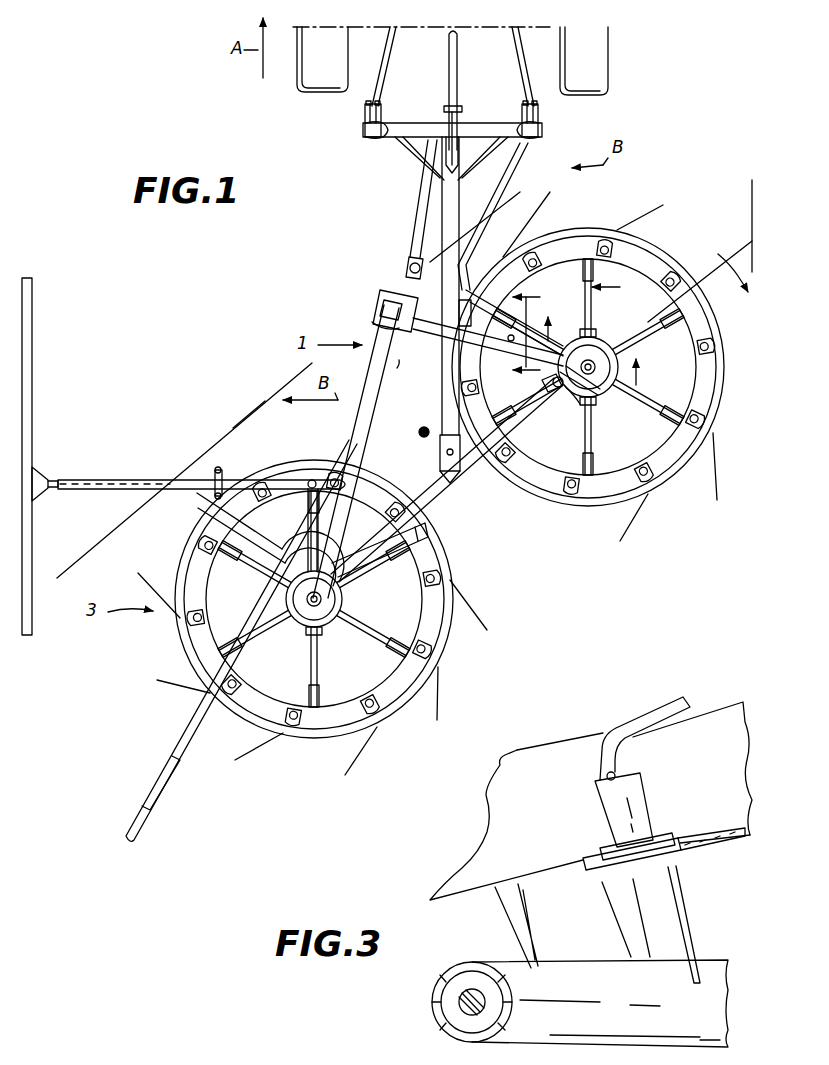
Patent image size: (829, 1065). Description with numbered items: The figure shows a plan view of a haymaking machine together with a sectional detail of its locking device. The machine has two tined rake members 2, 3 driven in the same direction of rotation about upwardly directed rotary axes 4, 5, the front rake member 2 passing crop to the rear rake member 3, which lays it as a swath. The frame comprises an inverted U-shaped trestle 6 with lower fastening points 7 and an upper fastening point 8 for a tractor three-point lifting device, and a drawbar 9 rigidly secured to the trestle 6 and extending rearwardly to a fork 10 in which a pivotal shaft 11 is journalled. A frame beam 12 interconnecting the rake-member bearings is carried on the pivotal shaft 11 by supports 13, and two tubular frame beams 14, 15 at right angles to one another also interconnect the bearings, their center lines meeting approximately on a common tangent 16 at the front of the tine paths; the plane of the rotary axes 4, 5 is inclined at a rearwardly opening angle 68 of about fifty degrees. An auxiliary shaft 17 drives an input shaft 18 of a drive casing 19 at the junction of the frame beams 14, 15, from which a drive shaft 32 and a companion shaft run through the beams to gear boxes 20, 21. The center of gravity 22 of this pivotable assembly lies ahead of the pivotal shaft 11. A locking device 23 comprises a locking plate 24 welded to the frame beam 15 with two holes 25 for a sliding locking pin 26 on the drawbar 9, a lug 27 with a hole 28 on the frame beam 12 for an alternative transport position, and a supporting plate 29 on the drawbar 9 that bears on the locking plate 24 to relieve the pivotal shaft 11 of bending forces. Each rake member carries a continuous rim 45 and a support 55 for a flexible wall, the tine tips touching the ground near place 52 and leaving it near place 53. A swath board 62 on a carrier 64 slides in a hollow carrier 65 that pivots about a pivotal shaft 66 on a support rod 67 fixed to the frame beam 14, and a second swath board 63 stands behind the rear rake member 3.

In FIG. 1, the rake member 2 is at (603, 512).
In FIG. 1, the rake member 3 is at (314, 599).
In FIG. 1, the rotary axis 4 is at (589, 357).
In FIG. 1, the rotary axis 5 is at (305, 616).
In FIG. 1, the trestle 6 is at (410, 122).
In FIG. 1, the fastening points 7 is at (362, 114).
In FIG. 1, the fastening point 8 is at (458, 105).
In FIG. 1, the drawbar 9 is at (450, 212).
In FIG. 3, the drawbar 9 is at (553, 765).
In FIG. 1, the fork 10 is at (439, 440).
In FIG. 1, the pivotal shaft 11 is at (445, 455).
In FIG. 1, the frame beam 12 is at (378, 558).
In FIG. 1, the supports 13 is at (462, 466).
In FIG. 1, the tubular frame beam 14 is at (388, 365).
In FIG. 1, the tubular frame beam 15 is at (578, 340).
In FIG. 3, the tubular frame beam 15 is at (470, 962).
In FIG. 1, the common tangent 16 is at (262, 396).
In FIG. 1, the auxiliary shaft 17 is at (424, 193).
In FIG. 1, the input shaft 18 is at (408, 264).
In FIG. 1, the drive casing 19 is at (380, 296).
In FIG. 1, the gear box 20 is at (331, 642).
In FIG. 1, the gear box 21 is at (608, 398).
In FIG. 1, the center of gravity 22 is at (420, 431).
In FIG. 3, the locking device 23 is at (590, 805).
In FIG. 1, the locking plate 24 is at (500, 330).
In FIG. 3, the locking plate 24 is at (632, 902).
In FIG. 1, the holes 25 is at (505, 352).
In FIG. 1, the locking pin 26 is at (462, 306).
In FIG. 3, the locking pin 26 is at (657, 712).
In FIG. 1, the lug 27 is at (548, 395).
In FIG. 1, the hole 28 is at (570, 395).
In FIG. 1, the supporting plate 29 is at (372, 317).
In FIG. 3, the supporting plate 29 is at (726, 855).
In FIG. 3, the drive shaft 32 is at (458, 1000).
In FIG. 1, the rim 45 is at (698, 369).
In FIG. 1, the place 52 is at (606, 367).
In FIG. 1, the place 53 is at (400, 372).
In FIG. 1, the support 55 is at (714, 477).
In FIG. 1, the swath board 62 is at (33, 420).
In FIG. 1, the swath board 63 is at (160, 752).
In FIG. 1, the carrier 64 is at (52, 476).
In FIG. 1, the hollow carrier 65 is at (188, 478).
In FIG. 1, the pivotal shaft 66 is at (222, 470).
In FIG. 1, the support rod 67 is at (305, 470).
In FIG. 1, the angle 68 is at (742, 255).